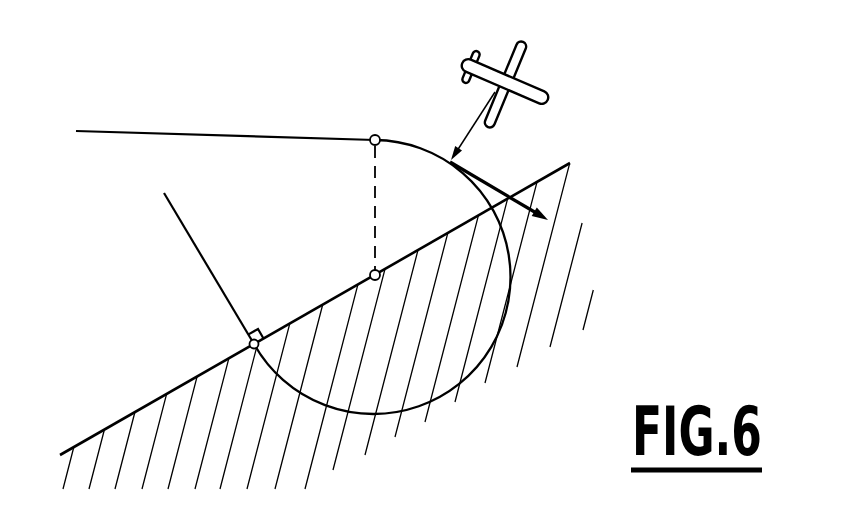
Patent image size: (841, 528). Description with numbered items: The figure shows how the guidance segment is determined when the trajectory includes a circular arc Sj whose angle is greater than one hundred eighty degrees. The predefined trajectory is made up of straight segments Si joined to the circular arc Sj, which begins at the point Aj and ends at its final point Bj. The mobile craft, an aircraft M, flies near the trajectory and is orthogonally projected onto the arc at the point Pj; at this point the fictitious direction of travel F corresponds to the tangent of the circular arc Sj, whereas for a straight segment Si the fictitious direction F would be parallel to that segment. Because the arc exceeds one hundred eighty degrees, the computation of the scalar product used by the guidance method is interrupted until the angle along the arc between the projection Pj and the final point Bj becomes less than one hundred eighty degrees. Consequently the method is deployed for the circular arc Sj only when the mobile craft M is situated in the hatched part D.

The hatched part D is at (168, 426).
The straight segment Si is at (118, 131).
The circular arc Sj is at (428, 149).
The start point of arc segment Aj is at (376, 191).
The final point Bj is at (236, 334).
The point of orthogonal projection Pj is at (457, 161).
The fictitious direction of travel F is at (570, 188).
The mobile craft M is at (540, 88).